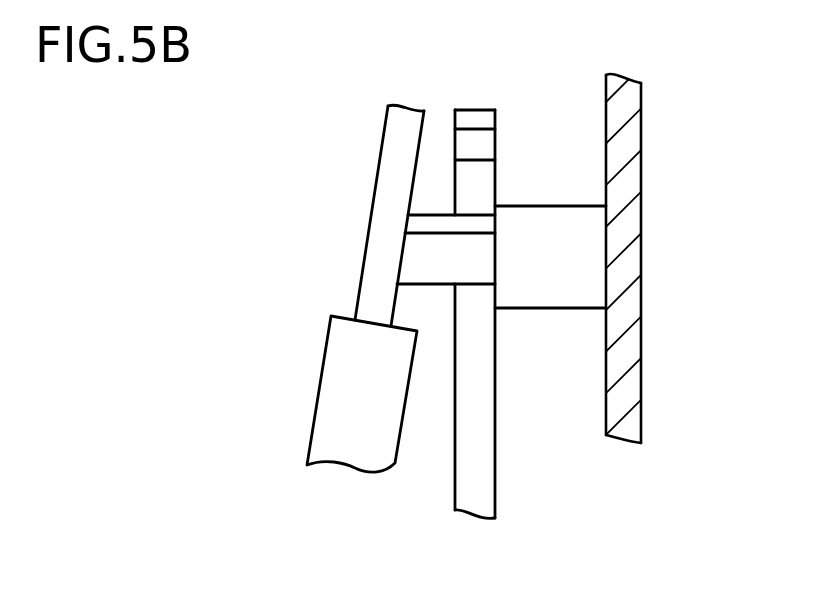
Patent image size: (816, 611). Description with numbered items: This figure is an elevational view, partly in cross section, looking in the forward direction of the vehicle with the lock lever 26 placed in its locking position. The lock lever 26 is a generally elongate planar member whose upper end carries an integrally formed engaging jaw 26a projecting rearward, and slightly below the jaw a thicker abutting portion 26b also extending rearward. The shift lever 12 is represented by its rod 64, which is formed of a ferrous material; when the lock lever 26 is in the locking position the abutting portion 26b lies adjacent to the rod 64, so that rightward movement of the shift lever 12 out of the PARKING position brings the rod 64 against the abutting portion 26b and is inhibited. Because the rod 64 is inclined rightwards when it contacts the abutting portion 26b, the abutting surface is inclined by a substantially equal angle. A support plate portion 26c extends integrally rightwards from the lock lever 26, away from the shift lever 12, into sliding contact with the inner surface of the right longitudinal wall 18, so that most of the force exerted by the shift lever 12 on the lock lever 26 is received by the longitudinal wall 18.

The shift lever 12 is at (361, 268).
The longitudinal wall 18 is at (628, 177).
The lock lever 26 is at (444, 265).
The engaging jaw 26a is at (473, 125).
The abutting portion 26b is at (423, 267).
The support plate portion 26c is at (550, 277).
The rod 64 is at (390, 185).